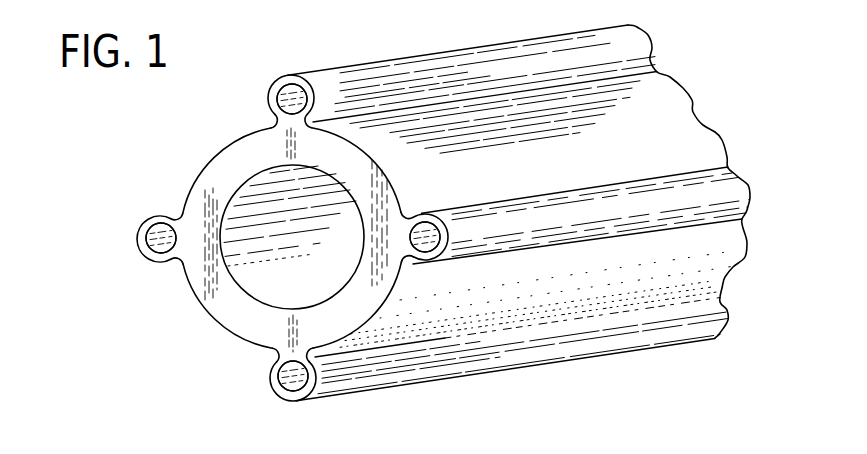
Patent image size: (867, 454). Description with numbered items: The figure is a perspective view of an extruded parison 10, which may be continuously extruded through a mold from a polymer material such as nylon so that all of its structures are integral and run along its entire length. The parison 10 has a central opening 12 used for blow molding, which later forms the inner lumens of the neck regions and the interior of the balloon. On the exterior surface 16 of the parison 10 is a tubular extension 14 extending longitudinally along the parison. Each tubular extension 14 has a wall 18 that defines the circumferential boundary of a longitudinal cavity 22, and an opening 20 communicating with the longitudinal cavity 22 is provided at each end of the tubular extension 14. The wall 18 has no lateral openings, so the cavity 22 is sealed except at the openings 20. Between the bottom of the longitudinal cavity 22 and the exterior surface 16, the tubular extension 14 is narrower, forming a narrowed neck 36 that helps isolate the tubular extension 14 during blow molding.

The extruded parison 10 is at (153, 134).
The central opening 12 is at (273, 205).
The tubular extension 14 is at (279, 78).
The exterior surface 16 is at (217, 317).
The wall 18 is at (272, 92).
The opening 20 is at (293, 88).
The longitudinal cavity 22 is at (293, 107).
The narrowed neck 36 is at (313, 122).